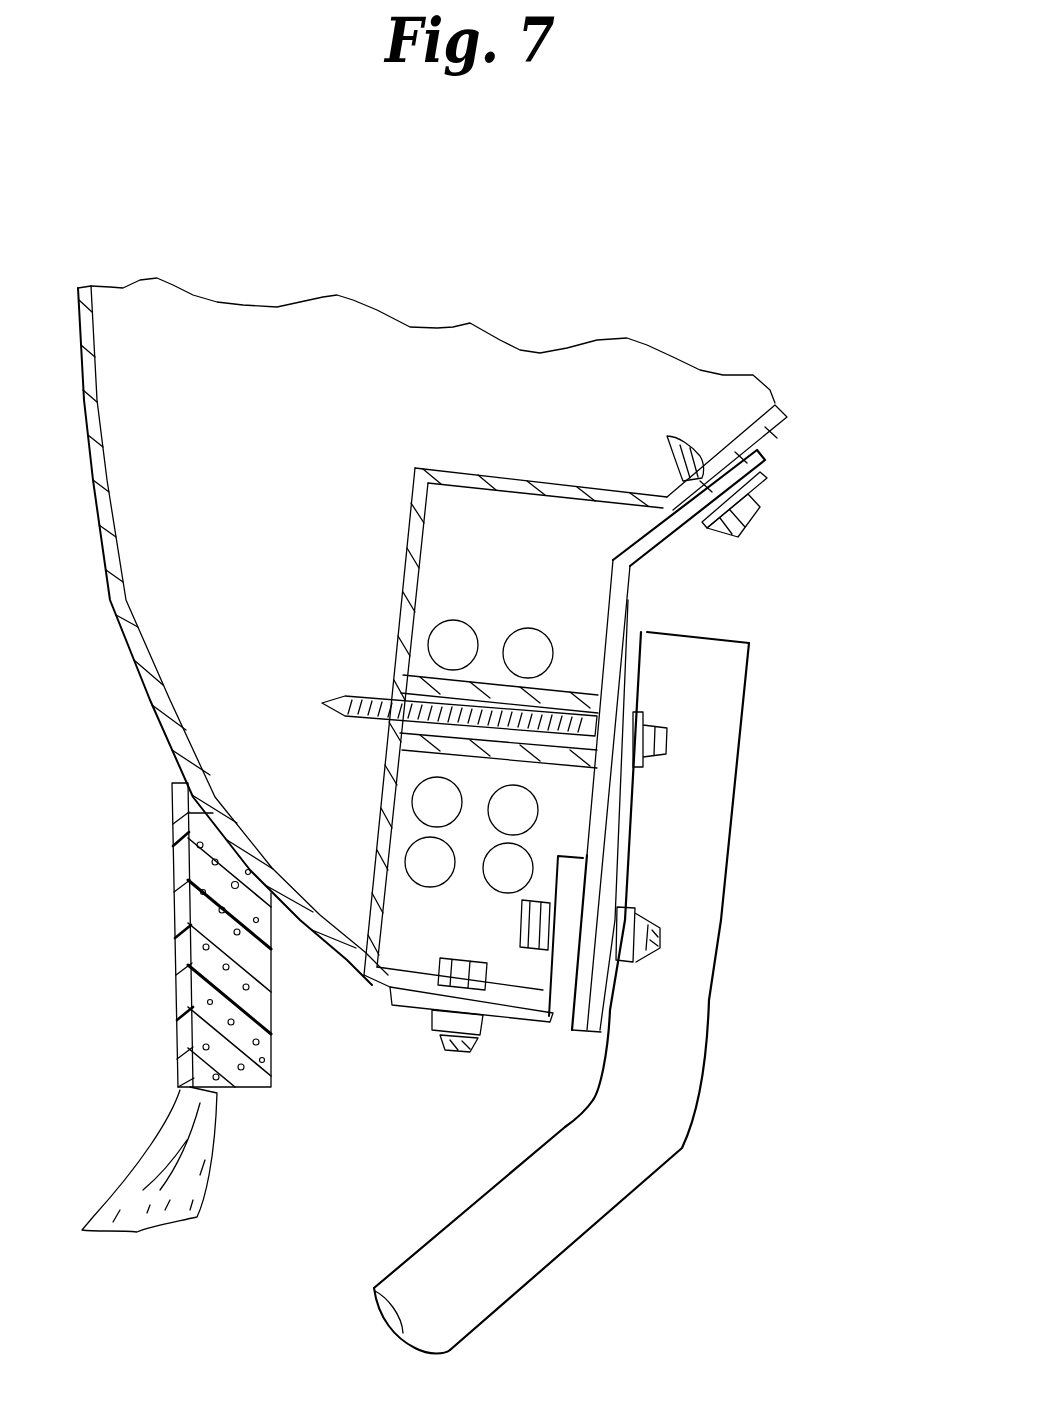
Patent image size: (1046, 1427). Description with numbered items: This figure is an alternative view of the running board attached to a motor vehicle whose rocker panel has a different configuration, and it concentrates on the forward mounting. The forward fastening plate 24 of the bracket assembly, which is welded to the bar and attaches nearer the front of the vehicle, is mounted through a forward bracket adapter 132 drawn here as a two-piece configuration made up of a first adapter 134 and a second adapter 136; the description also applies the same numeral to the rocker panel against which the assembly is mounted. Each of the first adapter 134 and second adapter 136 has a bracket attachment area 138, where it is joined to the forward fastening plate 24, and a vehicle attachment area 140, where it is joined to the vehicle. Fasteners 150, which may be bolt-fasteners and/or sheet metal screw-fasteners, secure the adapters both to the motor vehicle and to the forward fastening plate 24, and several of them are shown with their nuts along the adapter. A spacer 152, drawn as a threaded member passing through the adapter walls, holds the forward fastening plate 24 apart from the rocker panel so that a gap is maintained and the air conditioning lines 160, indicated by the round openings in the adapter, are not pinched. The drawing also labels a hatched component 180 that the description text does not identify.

The forward fastening plate 24 is at (648, 637).
The forward bracket adapter 132 is at (406, 578).
The first adapter 134 is at (636, 560).
The second adapter 136 is at (541, 1010).
The bracket attachment area 138 is at (553, 850).
The vehicle attachment area 140 is at (772, 486).
The fasteners 150 is at (757, 512).
The spacer 152 is at (494, 694).
The air conditioning lines 160 is at (428, 640).
The housing wall 180 is at (322, 337).